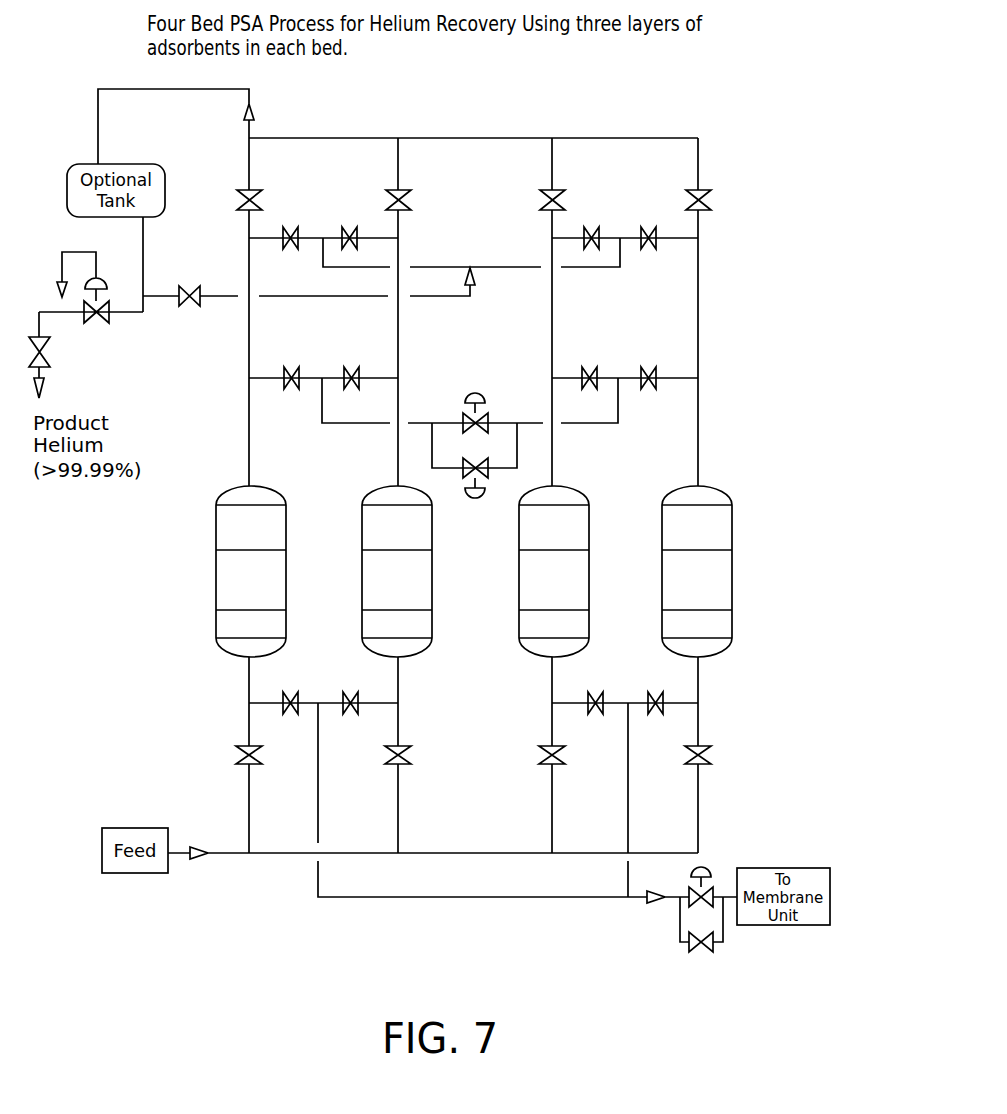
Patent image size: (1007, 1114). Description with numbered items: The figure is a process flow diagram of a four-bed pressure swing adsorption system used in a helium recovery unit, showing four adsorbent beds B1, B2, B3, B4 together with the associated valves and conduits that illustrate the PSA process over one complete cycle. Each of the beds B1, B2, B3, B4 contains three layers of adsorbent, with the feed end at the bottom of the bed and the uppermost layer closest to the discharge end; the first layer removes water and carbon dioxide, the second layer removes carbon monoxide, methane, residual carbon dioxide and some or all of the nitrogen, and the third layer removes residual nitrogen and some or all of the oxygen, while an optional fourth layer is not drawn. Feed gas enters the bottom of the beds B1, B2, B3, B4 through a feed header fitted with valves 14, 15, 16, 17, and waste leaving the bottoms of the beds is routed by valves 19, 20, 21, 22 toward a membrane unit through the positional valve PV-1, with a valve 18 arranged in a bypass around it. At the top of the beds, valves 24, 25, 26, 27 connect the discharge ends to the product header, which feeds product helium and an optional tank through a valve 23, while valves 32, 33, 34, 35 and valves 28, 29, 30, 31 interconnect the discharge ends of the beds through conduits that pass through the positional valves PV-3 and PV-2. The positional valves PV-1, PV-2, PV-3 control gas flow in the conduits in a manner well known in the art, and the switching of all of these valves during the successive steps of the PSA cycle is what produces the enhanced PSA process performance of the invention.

The feed valve bed B1 14 is at (238, 764).
The feed valve bed B2 15 is at (388, 764).
The feed valve bed B3 16 is at (542, 764).
The feed valve bed B4 17 is at (692, 747).
The bypass valve to membrane unit 18 is at (688, 949).
The waste valve bed B1 19 is at (304, 672).
The waste valve bed B2 20 is at (343, 692).
The waste valve bed B3 21 is at (589, 692).
The waste valve bed B4 22 is at (649, 692).
The product/purge valve 23 is at (199, 307).
The product valve bed B1 24 is at (240, 193).
The product valve bed B2 25 is at (389, 192).
The product valve bed B3 26 is at (542, 209).
The product valve bed B4 27 is at (688, 208).
The equalization valve bed B1 28 is at (286, 371).
The equalization valve bed B2 29 is at (346, 371).
The equalization valve bed B3 30 is at (584, 371).
The equalization valve bed B4 31 is at (643, 371).
The purge valve bed B1 32 is at (285, 231).
The purge valve bed B2 33 is at (344, 231).
The purge valve bed B3 34 is at (586, 233).
The purge valve bed B4 35 is at (641, 233).
The adsorbent bed B1 is at (216, 560).
The adsorbent bed B2 is at (362, 560).
The adsorbent bed B3 is at (519, 560).
The adsorbent bed B4 is at (662, 560).
The positional valve PV-1 is at (700, 868).
The positional valve PV-2 is at (498, 516).
The positional valve PV-3 is at (498, 378).